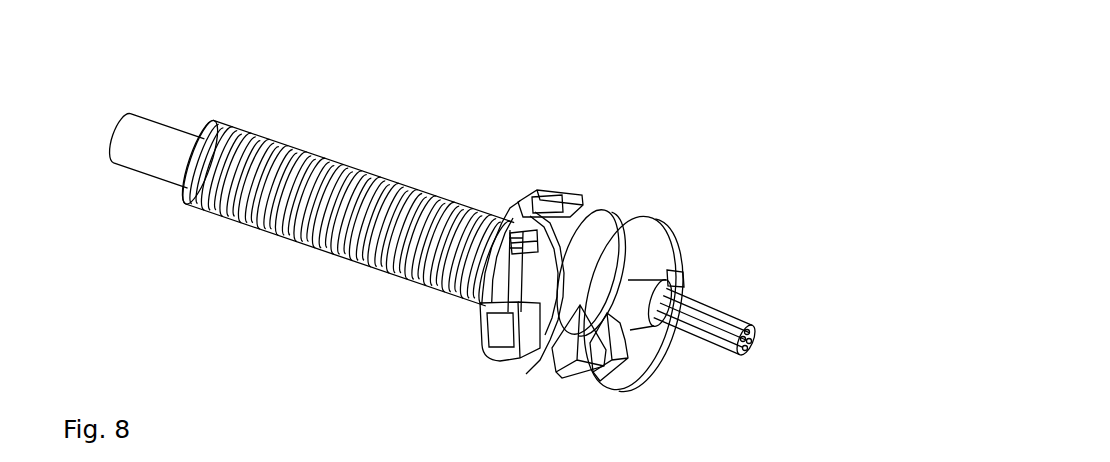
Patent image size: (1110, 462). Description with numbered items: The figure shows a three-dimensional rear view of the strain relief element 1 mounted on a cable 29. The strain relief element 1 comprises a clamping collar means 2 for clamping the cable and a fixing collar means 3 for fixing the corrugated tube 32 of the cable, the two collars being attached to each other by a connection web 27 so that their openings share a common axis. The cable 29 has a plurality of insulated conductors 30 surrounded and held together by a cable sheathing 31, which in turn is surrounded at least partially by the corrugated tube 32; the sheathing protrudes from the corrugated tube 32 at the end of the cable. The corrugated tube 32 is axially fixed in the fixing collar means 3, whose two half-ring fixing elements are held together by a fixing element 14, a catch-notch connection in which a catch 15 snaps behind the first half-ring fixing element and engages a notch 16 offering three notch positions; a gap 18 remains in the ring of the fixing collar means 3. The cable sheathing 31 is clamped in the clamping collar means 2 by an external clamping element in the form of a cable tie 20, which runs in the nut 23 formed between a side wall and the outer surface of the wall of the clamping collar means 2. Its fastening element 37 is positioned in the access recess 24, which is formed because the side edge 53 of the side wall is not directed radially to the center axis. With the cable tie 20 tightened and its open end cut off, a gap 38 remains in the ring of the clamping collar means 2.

The strain relief element 1 is at (625, 173).
The clamping collar means 2 is at (628, 395).
The fixing collar means 3 is at (498, 358).
The fixing element 14 is at (485, 280).
The catch 15 is at (510, 285).
The notch 16 is at (517, 237).
The gap in the ring of the fixing collar means 18 is at (533, 310).
The cable tie 20 is at (597, 325).
The nut 23 is at (615, 233).
The access recess 24 is at (695, 252).
The connection web 27 is at (578, 220).
The cable 29 is at (397, 142).
The conductors 30 is at (740, 357).
The cable sheathing 31 is at (640, 330).
The corrugated tube 32 is at (312, 150).
The fastening element 37 is at (680, 285).
The gap in the ring of the clamping collar means 38 is at (625, 350).
The side edge of the side wall 53 is at (672, 235).